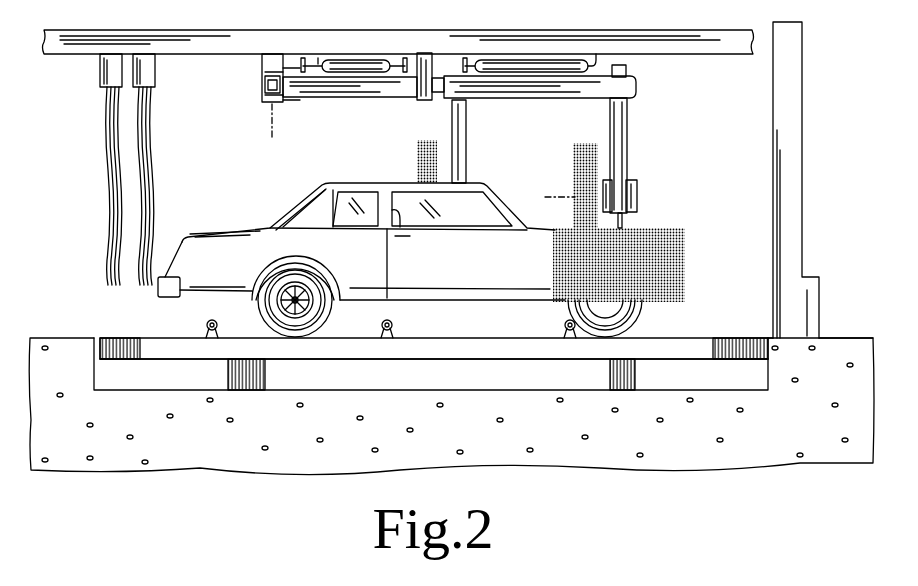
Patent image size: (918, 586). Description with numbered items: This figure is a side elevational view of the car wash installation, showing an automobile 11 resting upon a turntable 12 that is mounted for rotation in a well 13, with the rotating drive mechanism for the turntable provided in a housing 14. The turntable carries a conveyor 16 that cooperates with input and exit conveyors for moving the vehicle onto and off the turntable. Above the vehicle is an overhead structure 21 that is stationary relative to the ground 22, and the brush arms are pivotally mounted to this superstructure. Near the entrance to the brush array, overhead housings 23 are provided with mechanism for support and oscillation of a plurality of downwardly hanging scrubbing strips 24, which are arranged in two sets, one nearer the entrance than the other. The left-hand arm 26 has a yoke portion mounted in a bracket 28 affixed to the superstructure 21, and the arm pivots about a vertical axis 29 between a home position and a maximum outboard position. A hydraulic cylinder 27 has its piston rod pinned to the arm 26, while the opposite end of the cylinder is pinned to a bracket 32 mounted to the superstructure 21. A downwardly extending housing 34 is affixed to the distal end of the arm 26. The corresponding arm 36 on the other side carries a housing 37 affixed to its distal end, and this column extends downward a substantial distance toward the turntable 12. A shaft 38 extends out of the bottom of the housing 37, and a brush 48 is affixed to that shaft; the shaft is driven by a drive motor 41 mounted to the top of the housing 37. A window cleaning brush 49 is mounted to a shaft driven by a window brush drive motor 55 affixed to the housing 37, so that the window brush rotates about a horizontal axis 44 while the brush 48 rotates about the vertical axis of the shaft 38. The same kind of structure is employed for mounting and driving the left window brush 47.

The automobile 11 is at (452, 277).
The turntable 12 is at (118, 350).
The well 13 is at (146, 378).
The housing 14 is at (442, 385).
The conveyor 16 is at (207, 325).
The overhead structure 21 is at (143, 42).
The ground 22 is at (70, 375).
The overhead housings 23 is at (106, 72).
The scrubbing strips 24 is at (107, 164).
The left-hand arm 26 is at (333, 88).
The hydraulic cylinder 27 is at (352, 61).
The bracket 28 is at (262, 90).
The vertical axis 29 is at (318, 60).
The bracket 32 is at (406, 56).
The housing 34 is at (461, 153).
The arm 36 is at (630, 89).
The housing 37 is at (627, 138).
The shaft 38 is at (630, 222).
The drive motor 41 is at (627, 71).
The horizontal axis 44 is at (556, 196).
The left window brush 47 is at (417, 164).
The brush 48 is at (688, 247).
The window cleaning brush 49 is at (575, 154).
The window brush drive motor 55 is at (638, 186).